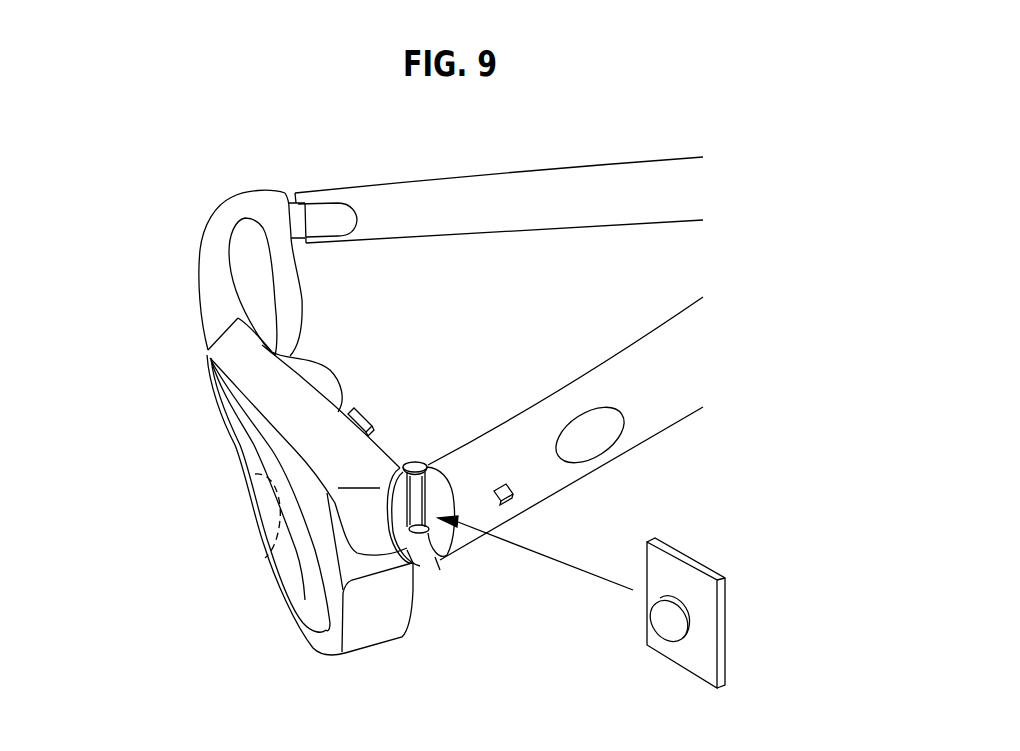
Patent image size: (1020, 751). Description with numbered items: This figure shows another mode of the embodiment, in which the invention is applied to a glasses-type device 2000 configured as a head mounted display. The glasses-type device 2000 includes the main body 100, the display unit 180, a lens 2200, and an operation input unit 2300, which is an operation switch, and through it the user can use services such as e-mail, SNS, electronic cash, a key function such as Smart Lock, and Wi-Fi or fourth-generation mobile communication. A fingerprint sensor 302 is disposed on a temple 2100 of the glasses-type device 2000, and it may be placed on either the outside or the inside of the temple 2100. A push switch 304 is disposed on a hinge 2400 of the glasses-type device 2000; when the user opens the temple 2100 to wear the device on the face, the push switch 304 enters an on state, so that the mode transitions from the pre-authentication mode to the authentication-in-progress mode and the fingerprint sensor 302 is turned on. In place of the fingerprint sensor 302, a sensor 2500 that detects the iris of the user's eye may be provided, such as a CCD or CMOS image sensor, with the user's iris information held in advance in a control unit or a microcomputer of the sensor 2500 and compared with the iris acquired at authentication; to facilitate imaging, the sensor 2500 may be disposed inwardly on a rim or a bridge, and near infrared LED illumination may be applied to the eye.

The glasses-type device 2000 is at (548, 716).
The temple 2100 is at (525, 190).
The lens 2200 is at (305, 598).
The operation input unit 2300 is at (500, 483).
The hinge 2400 is at (439, 554).
The sensor 2500 is at (358, 408).
The main body 100 is at (370, 628).
The display unit 180 is at (274, 503).
The fingerprint sensor 302 is at (603, 440).
The push switch 304 is at (682, 575).